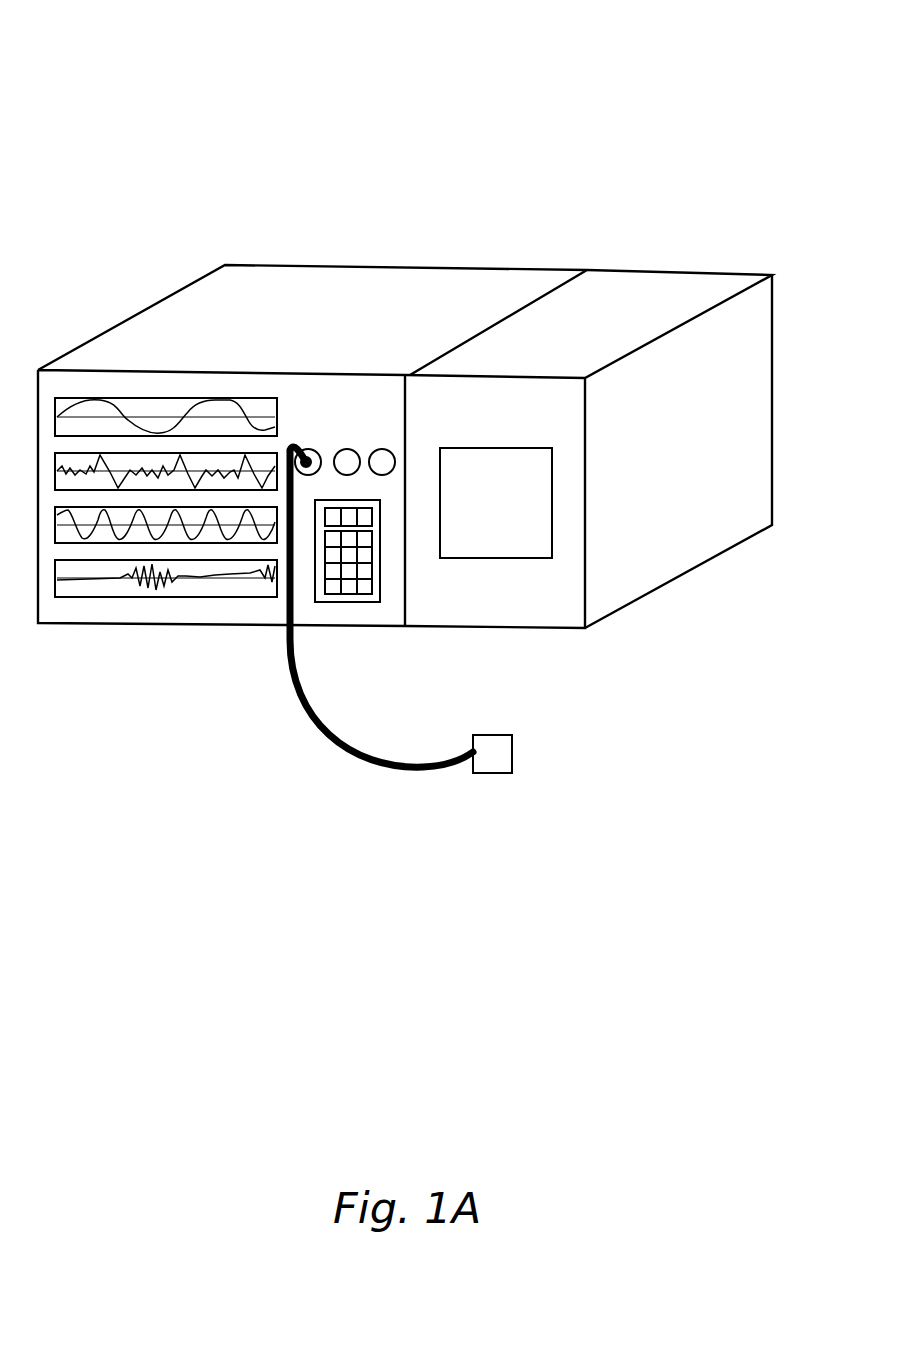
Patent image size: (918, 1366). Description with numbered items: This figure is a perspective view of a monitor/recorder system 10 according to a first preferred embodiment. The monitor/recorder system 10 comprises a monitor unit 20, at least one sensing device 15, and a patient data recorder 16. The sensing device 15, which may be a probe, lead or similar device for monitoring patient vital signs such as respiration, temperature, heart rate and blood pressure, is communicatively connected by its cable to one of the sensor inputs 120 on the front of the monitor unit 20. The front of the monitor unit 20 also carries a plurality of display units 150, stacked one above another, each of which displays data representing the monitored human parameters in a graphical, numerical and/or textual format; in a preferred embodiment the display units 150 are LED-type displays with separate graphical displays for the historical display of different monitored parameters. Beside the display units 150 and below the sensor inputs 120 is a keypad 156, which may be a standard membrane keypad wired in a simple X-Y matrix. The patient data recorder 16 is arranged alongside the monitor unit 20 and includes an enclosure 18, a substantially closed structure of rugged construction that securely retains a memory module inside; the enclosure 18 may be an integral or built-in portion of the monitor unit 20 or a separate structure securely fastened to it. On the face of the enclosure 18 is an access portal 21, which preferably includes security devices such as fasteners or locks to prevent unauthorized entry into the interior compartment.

The monitor/recorder system 10 is at (196, 30).
The monitor unit 20 is at (323, 285).
The patient data recorder 16 is at (645, 298).
The enclosure 18 is at (633, 540).
The access portal 21 is at (513, 468).
The sensor inputs 120 is at (380, 449).
The keypad 156 is at (380, 570).
The display unit 150 is at (112, 597).
The sensing device 15 is at (512, 757).